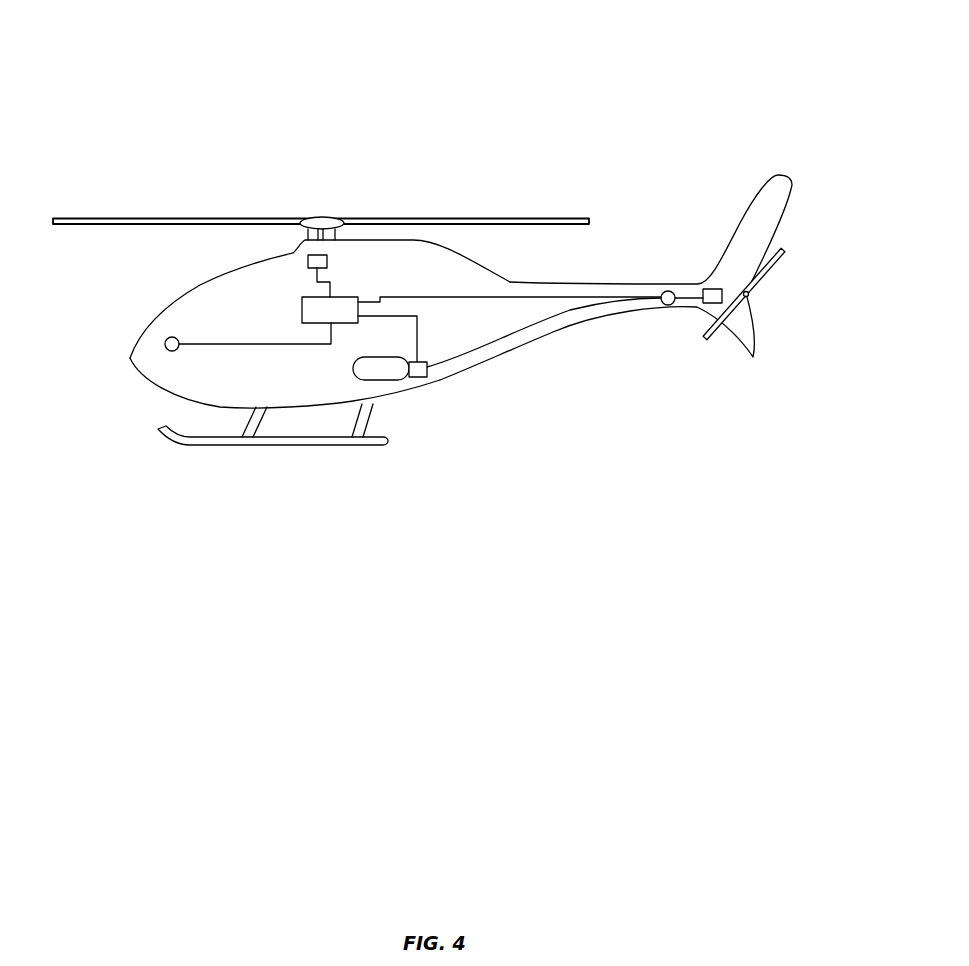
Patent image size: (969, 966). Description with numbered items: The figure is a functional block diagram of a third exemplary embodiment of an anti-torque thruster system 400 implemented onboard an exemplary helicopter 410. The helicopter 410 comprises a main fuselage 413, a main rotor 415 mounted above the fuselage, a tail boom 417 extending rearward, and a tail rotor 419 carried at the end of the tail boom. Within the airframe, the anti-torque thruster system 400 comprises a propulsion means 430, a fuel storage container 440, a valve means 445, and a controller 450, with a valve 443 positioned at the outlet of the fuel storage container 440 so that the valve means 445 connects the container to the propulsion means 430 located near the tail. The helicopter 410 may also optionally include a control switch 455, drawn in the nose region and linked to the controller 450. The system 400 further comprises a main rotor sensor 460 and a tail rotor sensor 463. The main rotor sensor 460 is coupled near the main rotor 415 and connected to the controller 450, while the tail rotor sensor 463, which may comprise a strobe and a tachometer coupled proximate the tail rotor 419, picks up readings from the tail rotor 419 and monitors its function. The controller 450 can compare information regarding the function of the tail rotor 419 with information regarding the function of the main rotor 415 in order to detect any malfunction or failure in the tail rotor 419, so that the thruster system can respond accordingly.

The anti-torque thruster system 400 is at (283, 60).
The helicopter 410 is at (183, 183).
The main fuselage 413 is at (177, 295).
The main rotor 415 is at (430, 220).
The tail boom 417 is at (615, 279).
The tail rotor 419 is at (775, 268).
The propulsion means 430 is at (672, 307).
The fuel storage container 440 is at (403, 381).
The valve 443 is at (428, 378).
The valve means 445 is at (538, 325).
The controller 450 is at (360, 297).
The control switch 455 is at (165, 347).
The main rotor sensor 460 is at (303, 260).
The tail rotor sensor 463 is at (715, 287).